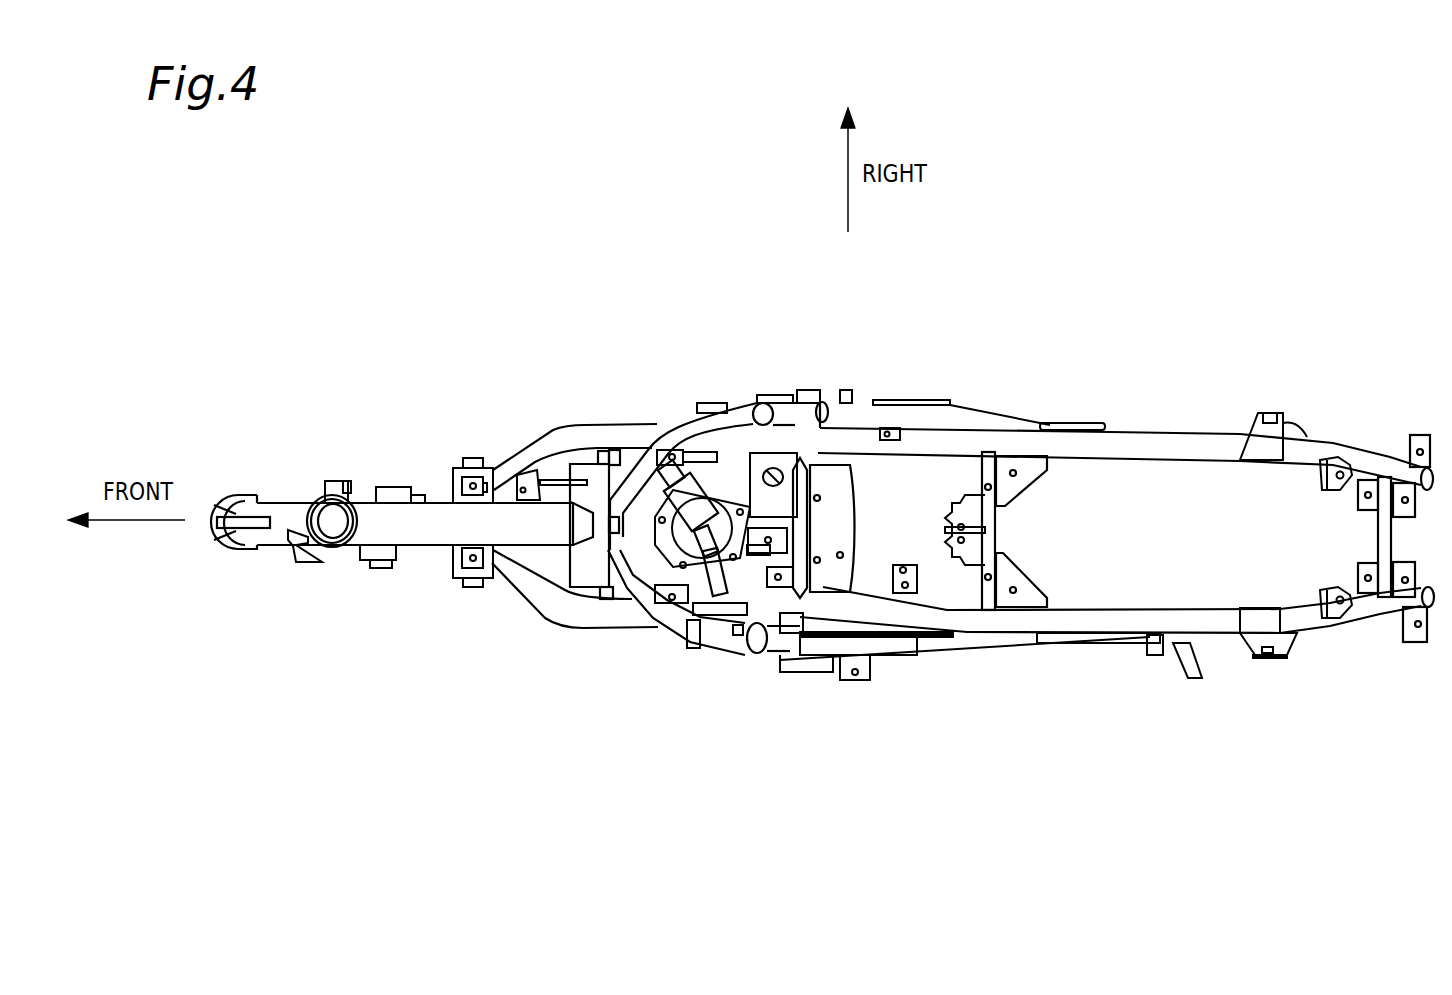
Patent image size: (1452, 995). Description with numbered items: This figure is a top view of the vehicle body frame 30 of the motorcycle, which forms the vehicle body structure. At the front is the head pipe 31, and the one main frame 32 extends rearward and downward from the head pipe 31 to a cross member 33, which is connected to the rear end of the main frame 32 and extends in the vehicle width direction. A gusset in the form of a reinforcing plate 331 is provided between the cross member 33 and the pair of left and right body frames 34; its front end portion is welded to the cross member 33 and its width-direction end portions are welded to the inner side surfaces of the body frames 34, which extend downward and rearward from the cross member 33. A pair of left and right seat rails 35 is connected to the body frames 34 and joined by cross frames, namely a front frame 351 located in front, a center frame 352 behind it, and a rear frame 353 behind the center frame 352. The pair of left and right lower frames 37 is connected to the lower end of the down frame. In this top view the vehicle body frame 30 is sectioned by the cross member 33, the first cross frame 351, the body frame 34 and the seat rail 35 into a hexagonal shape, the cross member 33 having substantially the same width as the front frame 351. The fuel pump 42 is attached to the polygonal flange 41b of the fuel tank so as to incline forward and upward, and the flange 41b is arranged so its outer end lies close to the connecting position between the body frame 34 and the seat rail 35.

The vehicle body frame 30 is at (506, 293).
The head pipe 31 is at (281, 530).
The main frame 32 is at (425, 528).
The cross member 33 is at (617, 398).
The reinforcing plate 331 is at (620, 590).
The body frames 34 is at (683, 398).
The seat rails 35 is at (940, 446).
The front frame 351 is at (822, 578).
The center frame 352 is at (990, 533).
The rear frame 353 is at (1387, 547).
The lower frames 37 is at (563, 398).
The flange 41b is at (716, 597).
The fuel pump 42 is at (705, 487).